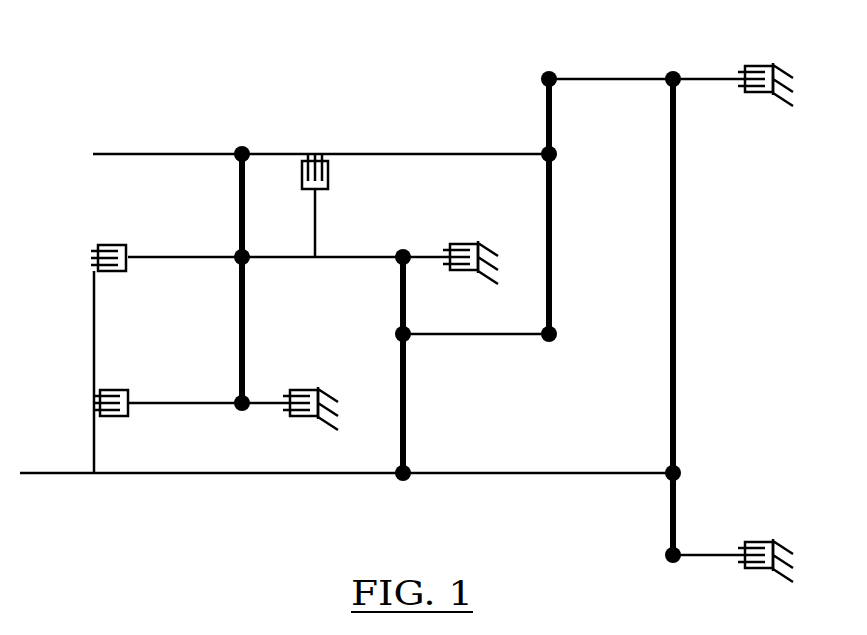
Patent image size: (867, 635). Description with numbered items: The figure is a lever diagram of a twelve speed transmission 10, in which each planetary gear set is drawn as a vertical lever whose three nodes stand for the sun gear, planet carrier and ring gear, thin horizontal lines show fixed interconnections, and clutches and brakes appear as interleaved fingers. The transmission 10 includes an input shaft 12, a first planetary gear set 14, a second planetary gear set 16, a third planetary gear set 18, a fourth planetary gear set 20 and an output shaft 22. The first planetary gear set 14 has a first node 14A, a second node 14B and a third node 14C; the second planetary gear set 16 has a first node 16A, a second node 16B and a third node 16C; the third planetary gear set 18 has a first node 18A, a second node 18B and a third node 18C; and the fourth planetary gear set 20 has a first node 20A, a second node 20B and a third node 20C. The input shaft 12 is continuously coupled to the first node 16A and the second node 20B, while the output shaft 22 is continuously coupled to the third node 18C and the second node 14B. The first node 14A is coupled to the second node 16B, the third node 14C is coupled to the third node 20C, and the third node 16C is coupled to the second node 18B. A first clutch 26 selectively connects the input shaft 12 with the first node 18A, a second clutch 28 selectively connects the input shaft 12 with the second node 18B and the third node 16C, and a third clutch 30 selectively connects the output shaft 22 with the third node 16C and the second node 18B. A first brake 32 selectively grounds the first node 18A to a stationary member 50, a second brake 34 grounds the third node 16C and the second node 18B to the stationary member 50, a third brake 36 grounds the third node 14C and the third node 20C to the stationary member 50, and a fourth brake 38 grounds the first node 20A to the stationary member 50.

The transmission 10 is at (776, 212).
The input shaft 12 is at (50, 476).
The first planetary gear set 14 is at (524, 120).
The first node of first planetary gear set 14A is at (548, 342).
The second node of first planetary gear set 14B is at (555, 156).
The third node of first planetary gear set 14C is at (550, 72).
The second planetary gear set 16 is at (438, 431).
The first node of second planetary gear set 16A is at (401, 482).
The second node of second planetary gear set 16B is at (398, 332).
The third node of second planetary gear set 16C is at (400, 250).
The third planetary gear set 18 is at (272, 124).
The first node of third planetary gear set 18A is at (240, 411).
The second node of third planetary gear set 18B is at (236, 263).
The third node of third planetary gear set 18C is at (242, 148).
The fourth planetary gear set 20 is at (644, 108).
The first node of fourth planetary gear set 20A is at (668, 556).
The second node of fourth planetary gear set 20B is at (680, 470).
The third node of fourth planetary gear set 20C is at (673, 72).
The output shaft 22 is at (118, 157).
The first clutch 26 is at (118, 389).
The second clutch 28 is at (105, 244).
The third clutch 30 is at (330, 168).
The first brake 32 is at (298, 420).
The second brake 34 is at (456, 246).
The third brake 36 is at (752, 64).
The fourth brake 38 is at (752, 541).
The stationary member 50 is at (326, 425).